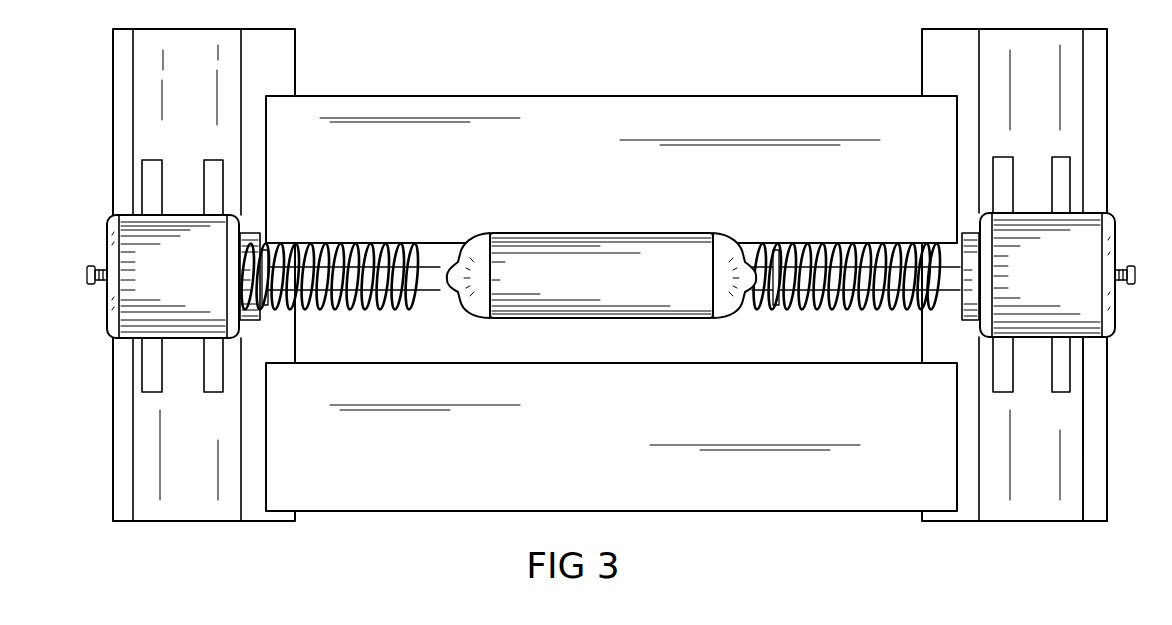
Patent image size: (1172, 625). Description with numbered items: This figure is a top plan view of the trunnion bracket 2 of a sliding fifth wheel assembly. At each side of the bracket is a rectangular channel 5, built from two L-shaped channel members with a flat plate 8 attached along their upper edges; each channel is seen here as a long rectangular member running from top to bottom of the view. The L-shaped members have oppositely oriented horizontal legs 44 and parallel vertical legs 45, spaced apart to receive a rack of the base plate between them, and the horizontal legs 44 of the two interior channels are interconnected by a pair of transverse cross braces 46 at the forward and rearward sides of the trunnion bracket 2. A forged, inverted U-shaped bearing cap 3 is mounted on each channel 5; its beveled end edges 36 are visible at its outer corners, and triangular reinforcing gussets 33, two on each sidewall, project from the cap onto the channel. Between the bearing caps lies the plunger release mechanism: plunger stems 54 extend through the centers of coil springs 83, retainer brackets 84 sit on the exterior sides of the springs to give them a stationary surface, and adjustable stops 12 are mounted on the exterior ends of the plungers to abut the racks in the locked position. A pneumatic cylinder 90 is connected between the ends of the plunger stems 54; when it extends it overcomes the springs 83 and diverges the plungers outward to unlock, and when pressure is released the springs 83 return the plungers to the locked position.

The trunnion bracket 2 is at (1109, 62).
The bearing caps 3 is at (226, 226).
The rectangular channels 5 is at (189, 502).
The flat plate 8 is at (148, 73).
The adjustable stops 12 is at (1130, 266).
The reinforcing gussets 33 is at (216, 158).
The end edges 36 is at (1112, 225).
The horizontal legs 44 is at (262, 512).
The vertical legs 45 is at (1085, 424).
The transverse cross braces 46 is at (444, 105).
The plunger stems 54 is at (375, 243).
The coil springs 83 is at (310, 242).
The retainer brackets 84 is at (262, 322).
The pneumatic cylinder 90 is at (613, 240).